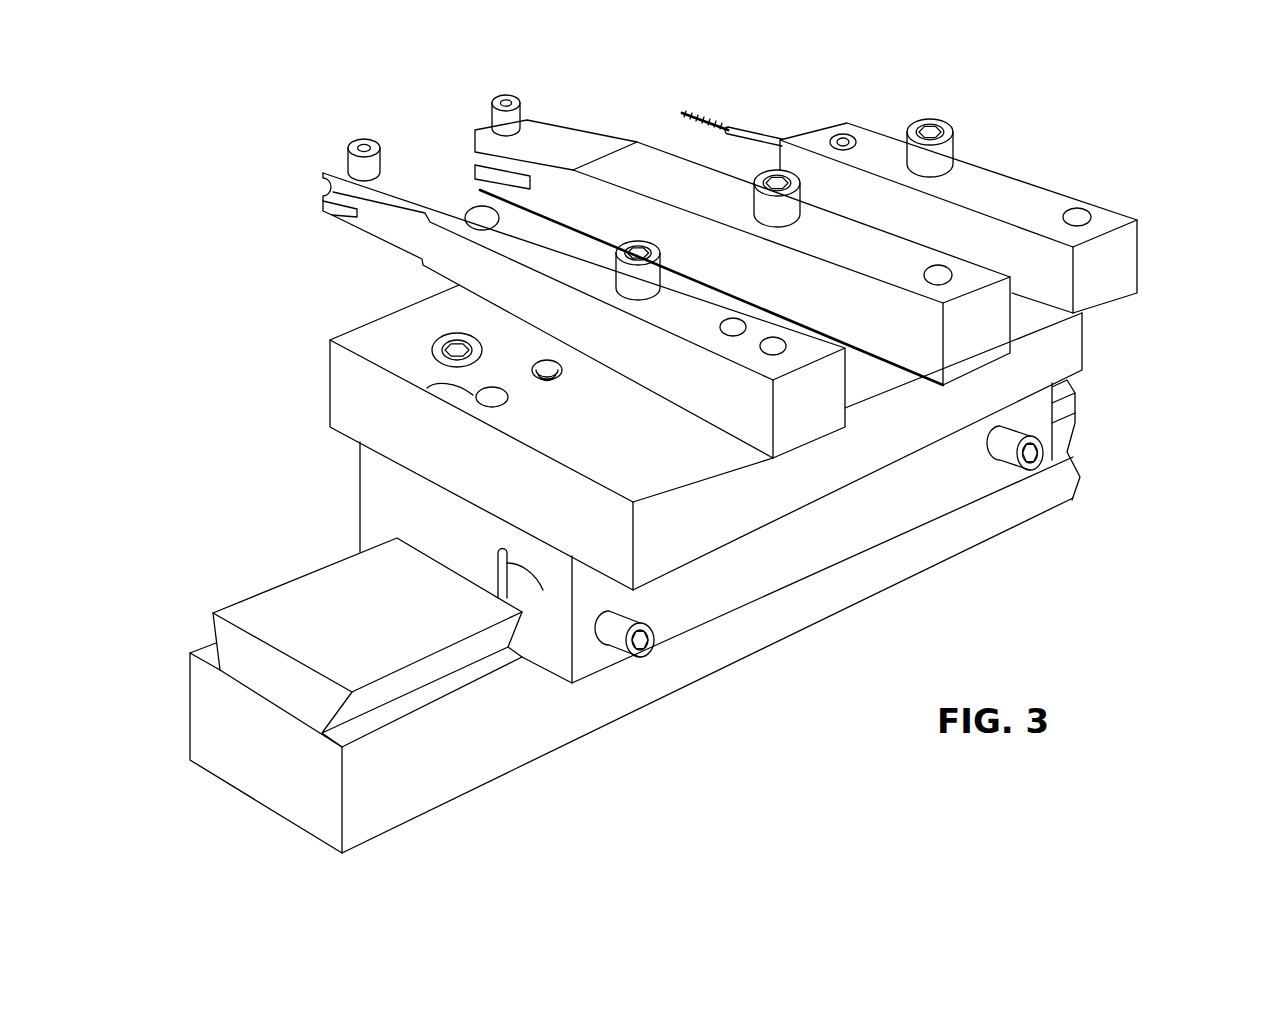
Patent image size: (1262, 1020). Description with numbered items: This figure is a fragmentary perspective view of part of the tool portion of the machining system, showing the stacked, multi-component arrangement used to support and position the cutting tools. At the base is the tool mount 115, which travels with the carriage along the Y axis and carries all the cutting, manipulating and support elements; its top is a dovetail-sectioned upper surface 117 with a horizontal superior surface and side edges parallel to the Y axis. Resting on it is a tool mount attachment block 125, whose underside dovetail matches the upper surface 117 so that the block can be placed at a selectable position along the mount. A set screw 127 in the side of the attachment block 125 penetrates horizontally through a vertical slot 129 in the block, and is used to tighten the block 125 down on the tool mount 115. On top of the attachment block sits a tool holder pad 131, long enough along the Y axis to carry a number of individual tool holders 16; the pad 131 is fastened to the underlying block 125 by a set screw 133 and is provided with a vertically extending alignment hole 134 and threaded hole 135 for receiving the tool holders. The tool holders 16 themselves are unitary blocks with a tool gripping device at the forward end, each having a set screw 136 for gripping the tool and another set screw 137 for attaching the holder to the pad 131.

The tool holders 16 is at (318, 234).
The tool mount 115 is at (452, 785).
The dovetail-sectioned upper surface 117 is at (198, 647).
The tool mount attachment block 125 is at (1053, 422).
The set screw 127 is at (643, 655).
The vertical slot 129 is at (543, 590).
The tool holder pad 131 is at (327, 403).
The set screw 133 is at (437, 338).
The alignment hole 134 is at (427, 388).
The threaded hole 135 is at (562, 364).
The set screw 136 is at (362, 140).
The set screw 137 is at (938, 118).